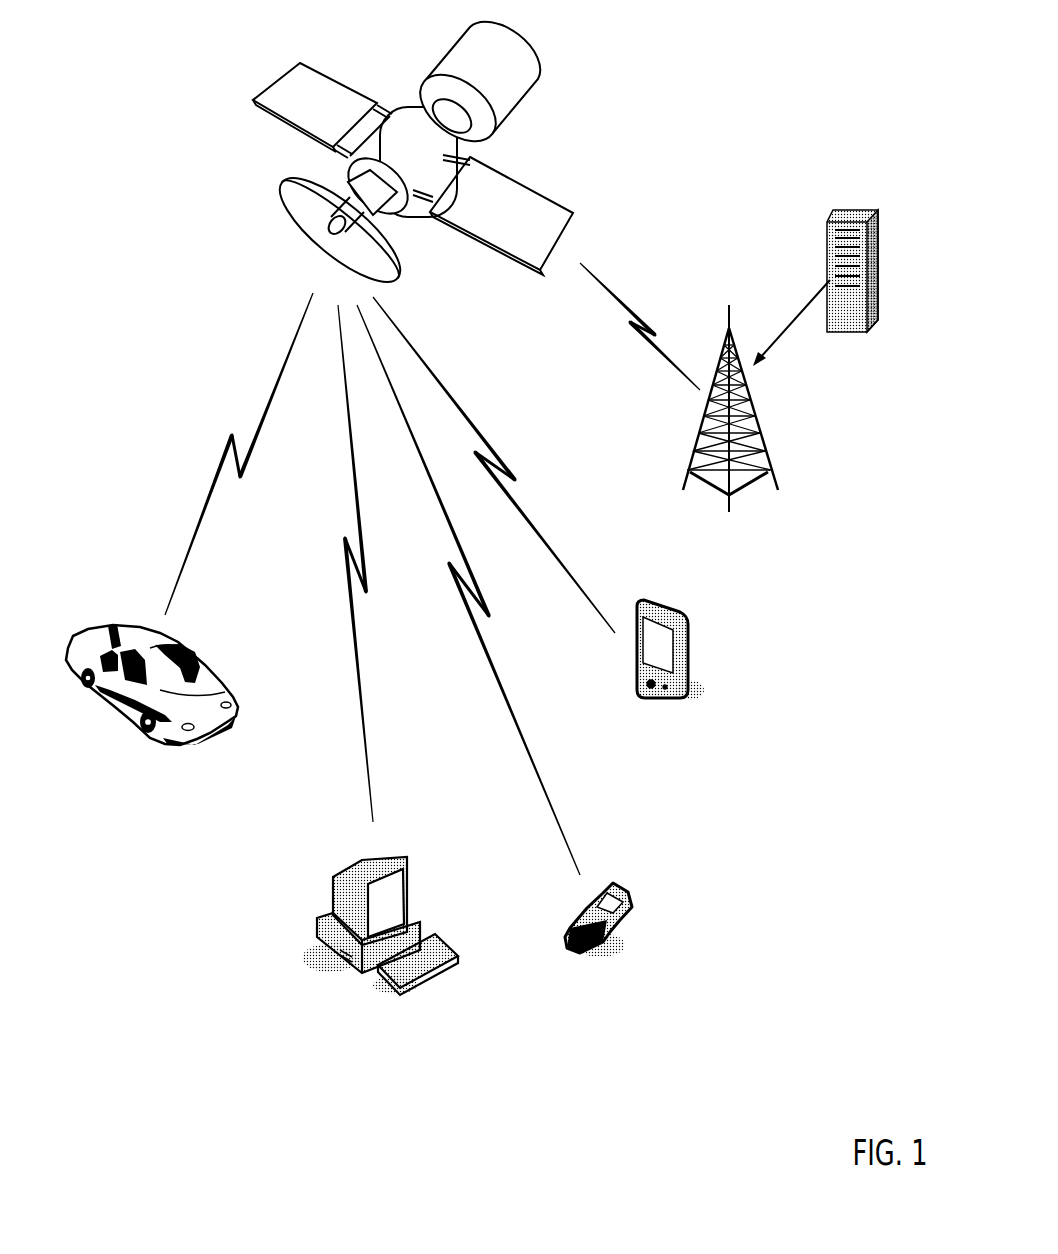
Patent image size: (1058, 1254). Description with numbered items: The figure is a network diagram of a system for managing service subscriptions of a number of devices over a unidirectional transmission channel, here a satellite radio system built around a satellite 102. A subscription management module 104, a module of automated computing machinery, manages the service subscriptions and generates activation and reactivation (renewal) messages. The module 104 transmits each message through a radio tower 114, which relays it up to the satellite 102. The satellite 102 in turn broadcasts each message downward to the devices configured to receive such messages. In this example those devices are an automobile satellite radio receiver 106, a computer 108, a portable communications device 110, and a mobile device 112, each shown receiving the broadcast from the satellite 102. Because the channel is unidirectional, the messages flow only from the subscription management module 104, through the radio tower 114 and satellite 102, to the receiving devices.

The satellite 102 is at (243, 192).
The subscription management module 104 is at (832, 439).
The automobile satellite radio receiver 106 is at (185, 855).
The computer 108 is at (358, 1061).
The portable communications device 110 is at (598, 1107).
The mobile device 112 is at (640, 770).
The radio tower 114 is at (720, 578).